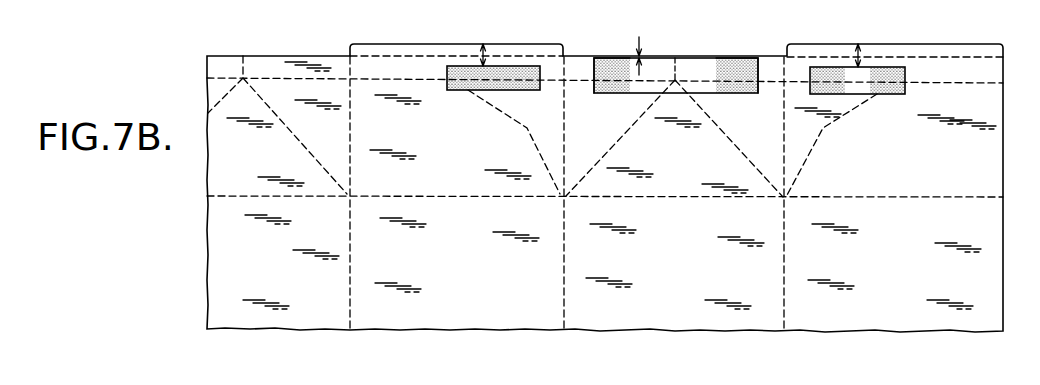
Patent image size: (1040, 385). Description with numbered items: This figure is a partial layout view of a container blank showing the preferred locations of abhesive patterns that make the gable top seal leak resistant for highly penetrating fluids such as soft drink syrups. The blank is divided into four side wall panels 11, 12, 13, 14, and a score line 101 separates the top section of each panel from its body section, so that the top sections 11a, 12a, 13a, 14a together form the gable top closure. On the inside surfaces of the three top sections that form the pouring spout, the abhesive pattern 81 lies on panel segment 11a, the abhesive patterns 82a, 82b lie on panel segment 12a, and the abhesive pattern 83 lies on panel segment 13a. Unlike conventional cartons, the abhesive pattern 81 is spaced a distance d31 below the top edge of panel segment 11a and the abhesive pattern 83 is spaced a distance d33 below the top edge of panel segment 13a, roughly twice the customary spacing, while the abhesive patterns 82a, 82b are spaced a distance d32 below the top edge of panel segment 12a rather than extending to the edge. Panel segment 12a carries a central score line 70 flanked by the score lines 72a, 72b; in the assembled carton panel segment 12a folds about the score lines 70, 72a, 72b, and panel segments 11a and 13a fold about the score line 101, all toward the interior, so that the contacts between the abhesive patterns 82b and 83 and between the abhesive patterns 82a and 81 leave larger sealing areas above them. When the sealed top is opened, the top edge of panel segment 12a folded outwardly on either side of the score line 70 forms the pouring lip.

The score line 101 is at (877, 198).
The side wall panel 11 is at (906, 278).
The side wall panel 12 is at (683, 275).
The side wall panel 13 is at (466, 273).
The side wall panel 14 is at (273, 271).
The top section 11a is at (917, 159).
The top section 12a is at (690, 161).
The top section 13a is at (466, 159).
The top section 14a is at (268, 160).
The score line 70 is at (678, 68).
The score line 72a is at (738, 145).
The score line 72b is at (616, 142).
The abhesive pattern 81 is at (832, 70).
The abhesive pattern 82a is at (745, 92).
The abhesive pattern 82b is at (612, 91).
The abhesive pattern 83 is at (515, 70).
The distance d31 is at (861, 52).
The distance d32 is at (641, 56).
The distance d33 is at (483, 50).